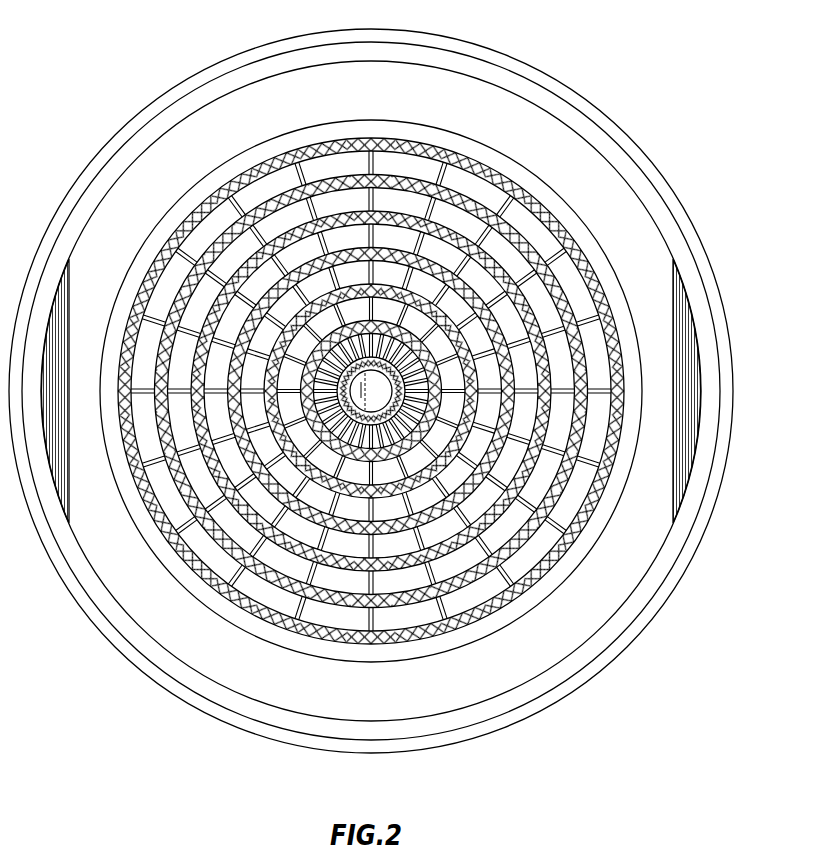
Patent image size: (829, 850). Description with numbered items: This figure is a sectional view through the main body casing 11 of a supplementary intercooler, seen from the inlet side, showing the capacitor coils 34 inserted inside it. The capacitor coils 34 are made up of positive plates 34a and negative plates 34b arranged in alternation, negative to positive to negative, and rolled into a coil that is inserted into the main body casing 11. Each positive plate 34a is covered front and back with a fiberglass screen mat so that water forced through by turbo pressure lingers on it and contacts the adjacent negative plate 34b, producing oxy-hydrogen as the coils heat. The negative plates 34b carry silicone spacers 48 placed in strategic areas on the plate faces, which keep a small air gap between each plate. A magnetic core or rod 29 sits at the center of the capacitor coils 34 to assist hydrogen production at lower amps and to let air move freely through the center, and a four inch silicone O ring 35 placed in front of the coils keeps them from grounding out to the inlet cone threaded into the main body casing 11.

The main body casing 11 is at (583, 90).
The capacitor coils 34 is at (400, 391).
The positive plates 34a is at (580, 291).
The negative plates 34b is at (558, 229).
The silicone O ring 35 is at (175, 204).
The magnetic core or rod 29 is at (378, 394).
The silicone spacers 48 is at (237, 553).